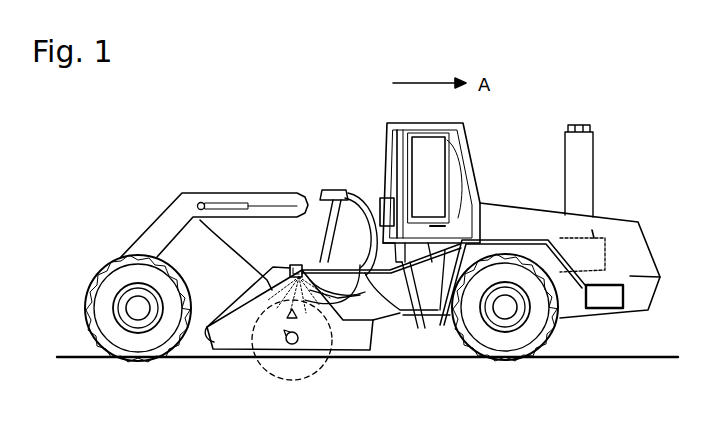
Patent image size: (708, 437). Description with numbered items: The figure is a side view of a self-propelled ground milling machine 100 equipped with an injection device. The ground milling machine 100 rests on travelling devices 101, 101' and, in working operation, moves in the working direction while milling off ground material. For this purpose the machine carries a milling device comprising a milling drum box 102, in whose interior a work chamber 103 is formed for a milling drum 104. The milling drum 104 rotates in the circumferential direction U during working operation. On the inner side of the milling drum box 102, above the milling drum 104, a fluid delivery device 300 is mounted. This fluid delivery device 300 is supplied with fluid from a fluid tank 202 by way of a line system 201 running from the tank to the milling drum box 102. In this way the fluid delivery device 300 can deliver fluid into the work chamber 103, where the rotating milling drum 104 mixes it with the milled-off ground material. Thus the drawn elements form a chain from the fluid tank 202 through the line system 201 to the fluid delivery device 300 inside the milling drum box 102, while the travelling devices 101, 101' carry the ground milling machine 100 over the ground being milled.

The ground milling machine 100 is at (342, 152).
The travelling device 101 is at (121, 338).
The travelling device 101' is at (505, 338).
The milling drum box 102 is at (212, 343).
The work chamber 103 is at (262, 303).
The milling drum 104 is at (313, 362).
The circumferential direction U is at (296, 346).
The line system 201 is at (417, 312).
The fluid tank 202 is at (602, 302).
The fluid delivery device 300 is at (296, 262).